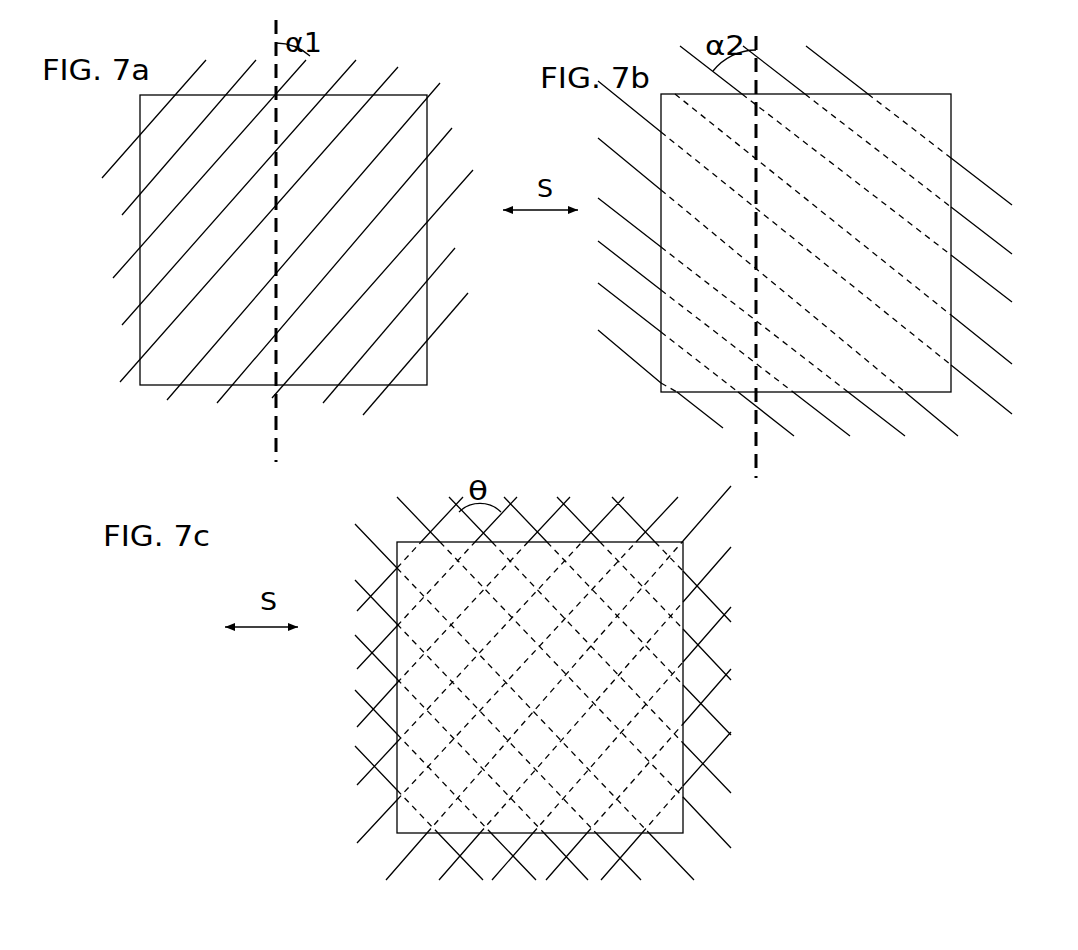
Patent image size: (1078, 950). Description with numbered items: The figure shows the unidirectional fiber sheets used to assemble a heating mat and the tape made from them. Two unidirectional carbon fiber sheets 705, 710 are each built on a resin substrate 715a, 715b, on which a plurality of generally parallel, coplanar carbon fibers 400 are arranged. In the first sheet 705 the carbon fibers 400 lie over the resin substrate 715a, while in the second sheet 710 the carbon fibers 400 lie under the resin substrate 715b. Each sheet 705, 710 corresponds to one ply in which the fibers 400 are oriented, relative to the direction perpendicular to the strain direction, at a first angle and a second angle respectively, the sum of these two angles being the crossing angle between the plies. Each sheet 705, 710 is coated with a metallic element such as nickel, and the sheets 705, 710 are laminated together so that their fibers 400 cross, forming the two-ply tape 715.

In FIG. 7A, the carbon fibers 400 is at (455, 310).
In FIG. 7B, the carbon fibers 400 is at (625, 351).
In FIG. 7C, the carbon fibers 400 is at (363, 748).
In FIG. 7A, the unidirectional carbon fiber sheet 705 is at (118, 312).
In FIG. 7B, the unidirectional carbon fiber sheet 710 is at (996, 316).
In FIG. 7C, the two-ply tape 715 is at (762, 721).
In FIG. 7A, the resin substrate 715a is at (357, 386).
In FIG. 7B, the resin substrate 715b is at (665, 392).